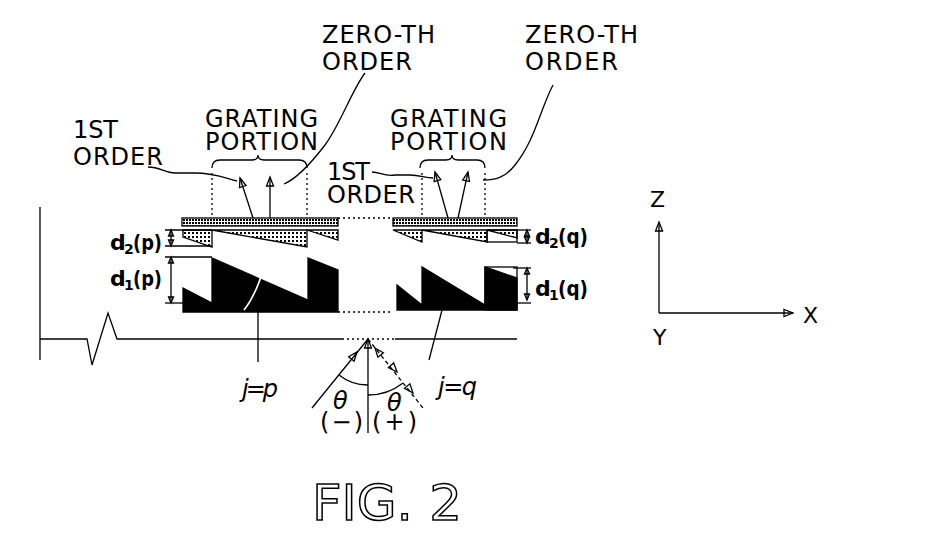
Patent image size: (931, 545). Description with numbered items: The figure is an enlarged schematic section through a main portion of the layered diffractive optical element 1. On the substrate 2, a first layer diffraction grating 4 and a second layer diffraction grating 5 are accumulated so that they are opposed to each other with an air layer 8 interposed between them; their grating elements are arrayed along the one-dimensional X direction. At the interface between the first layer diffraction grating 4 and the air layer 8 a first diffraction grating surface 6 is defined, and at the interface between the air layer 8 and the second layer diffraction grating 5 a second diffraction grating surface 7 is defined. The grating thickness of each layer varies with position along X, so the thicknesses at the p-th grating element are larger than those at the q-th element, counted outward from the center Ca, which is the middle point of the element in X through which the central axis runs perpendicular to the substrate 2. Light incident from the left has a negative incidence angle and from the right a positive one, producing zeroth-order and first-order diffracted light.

The diffractive optical element 1 is at (593, 228).
The substrate 2 is at (481, 325).
The first layer diffraction grating 4 is at (395, 292).
The second layer diffraction grating 5 is at (402, 225).
The first diffraction grating surface 6 is at (328, 265).
The second diffraction grating surface 7 is at (338, 236).
The air layer 8 is at (244, 310).
The center Ca is at (40, 223).